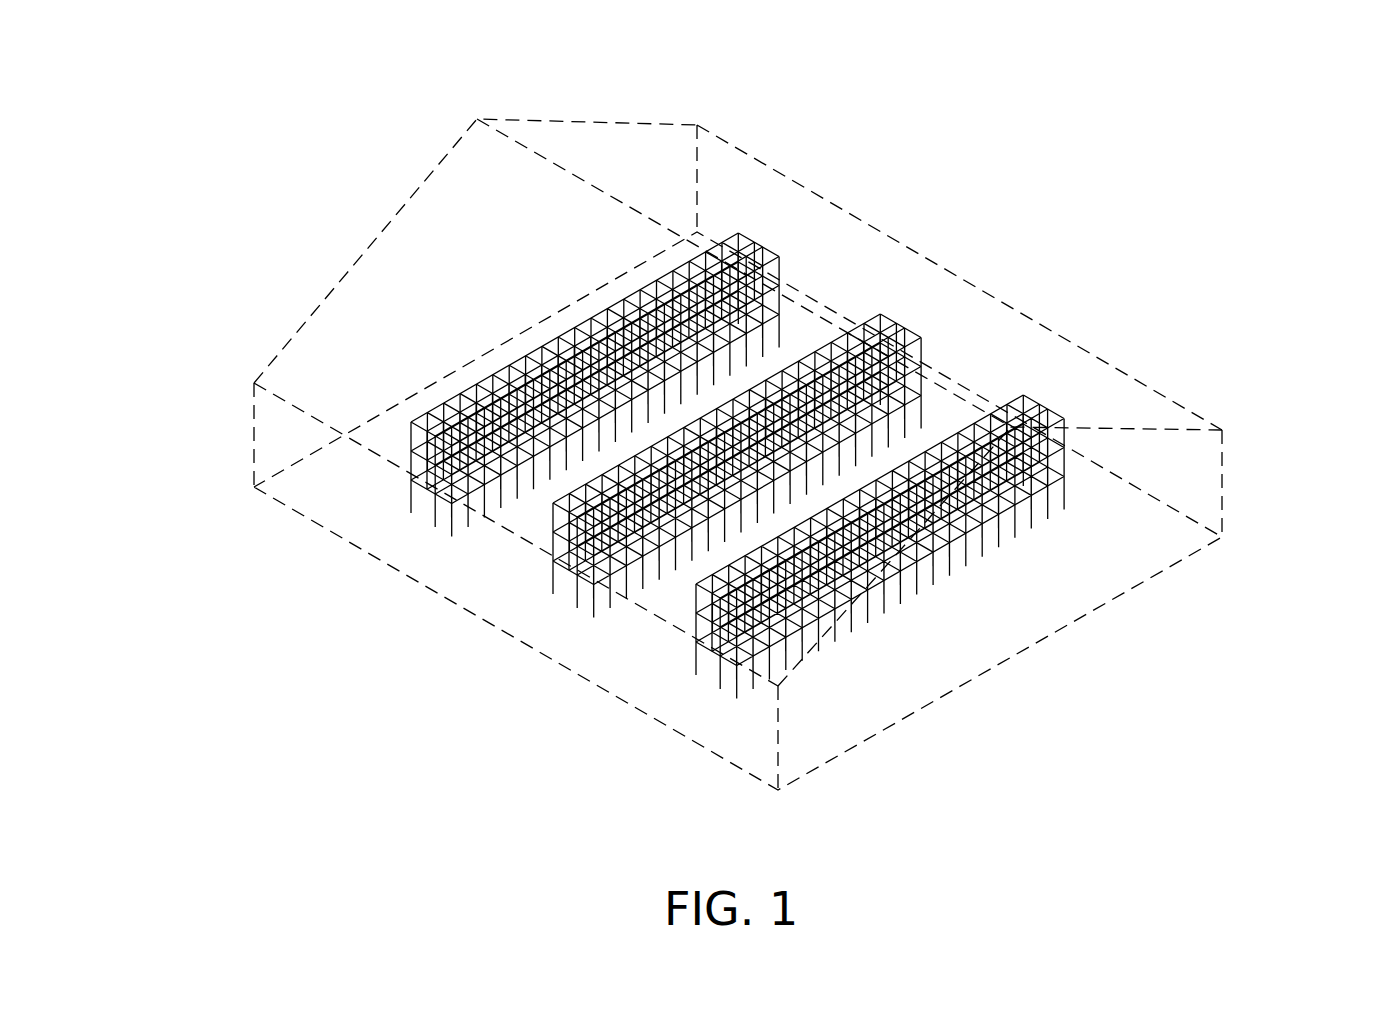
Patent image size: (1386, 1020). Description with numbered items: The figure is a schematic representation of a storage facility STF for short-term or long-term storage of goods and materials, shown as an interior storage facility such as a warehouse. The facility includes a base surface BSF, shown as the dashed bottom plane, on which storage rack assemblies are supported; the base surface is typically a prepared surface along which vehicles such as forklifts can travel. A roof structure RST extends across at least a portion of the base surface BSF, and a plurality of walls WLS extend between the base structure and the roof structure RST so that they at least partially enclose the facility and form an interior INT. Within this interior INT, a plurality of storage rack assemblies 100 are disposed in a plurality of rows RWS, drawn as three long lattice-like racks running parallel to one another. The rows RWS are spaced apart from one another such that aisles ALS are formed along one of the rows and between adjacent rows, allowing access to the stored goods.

The storage rack assembly 100 is at (622, 332).
The roof structure RST is at (612, 120).
The storage facility STF is at (1078, 195).
The walls WLS is at (254, 437).
The base surface BSF is at (545, 658).
The rows RWS is at (897, 312).
The aisles ALS is at (942, 410).
The interior INT is at (1022, 566).